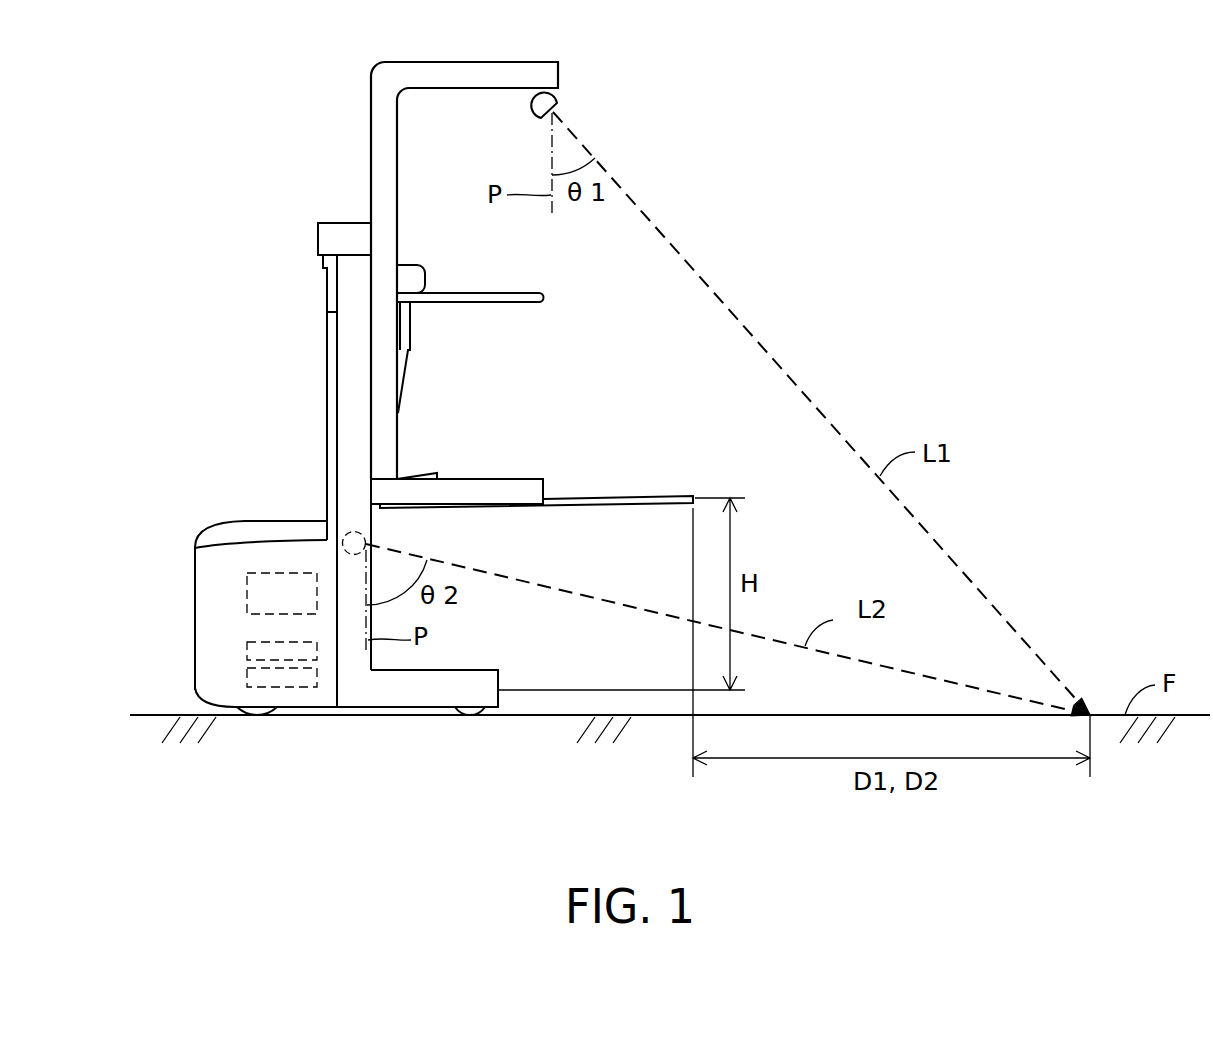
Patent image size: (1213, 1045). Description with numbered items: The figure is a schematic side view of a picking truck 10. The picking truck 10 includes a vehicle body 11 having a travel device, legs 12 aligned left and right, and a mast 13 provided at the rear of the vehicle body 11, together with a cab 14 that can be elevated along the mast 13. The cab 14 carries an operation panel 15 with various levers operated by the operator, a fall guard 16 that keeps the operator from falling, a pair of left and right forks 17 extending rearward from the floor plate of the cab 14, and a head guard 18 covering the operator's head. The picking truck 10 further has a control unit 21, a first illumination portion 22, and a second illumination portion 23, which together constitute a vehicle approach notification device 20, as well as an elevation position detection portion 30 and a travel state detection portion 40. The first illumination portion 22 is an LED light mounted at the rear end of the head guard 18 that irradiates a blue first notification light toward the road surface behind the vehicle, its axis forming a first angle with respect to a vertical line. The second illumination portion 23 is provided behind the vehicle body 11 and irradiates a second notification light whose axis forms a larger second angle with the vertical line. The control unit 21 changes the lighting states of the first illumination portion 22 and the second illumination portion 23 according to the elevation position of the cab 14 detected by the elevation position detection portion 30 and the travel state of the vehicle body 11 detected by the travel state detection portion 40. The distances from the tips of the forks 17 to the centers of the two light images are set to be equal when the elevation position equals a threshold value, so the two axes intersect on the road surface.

The picking truck 10 is at (187, 99).
The vehicle body 11 is at (195, 620).
The legs 12 is at (470, 675).
The mast 13 is at (343, 403).
The cab 14 is at (574, 362).
The operation panel 15 is at (409, 262).
The fall guard 16 is at (457, 299).
The forks 17 is at (635, 496).
The head guard 18 is at (475, 62).
The vehicle approach notification device 20 is at (1013, 252).
The control unit 21 is at (247, 588).
The first illumination portion 22 is at (560, 95).
The second illumination portion 23 is at (352, 532).
The elevation position detection portion 30 is at (247, 648).
The travel state detection portion 40 is at (247, 676).